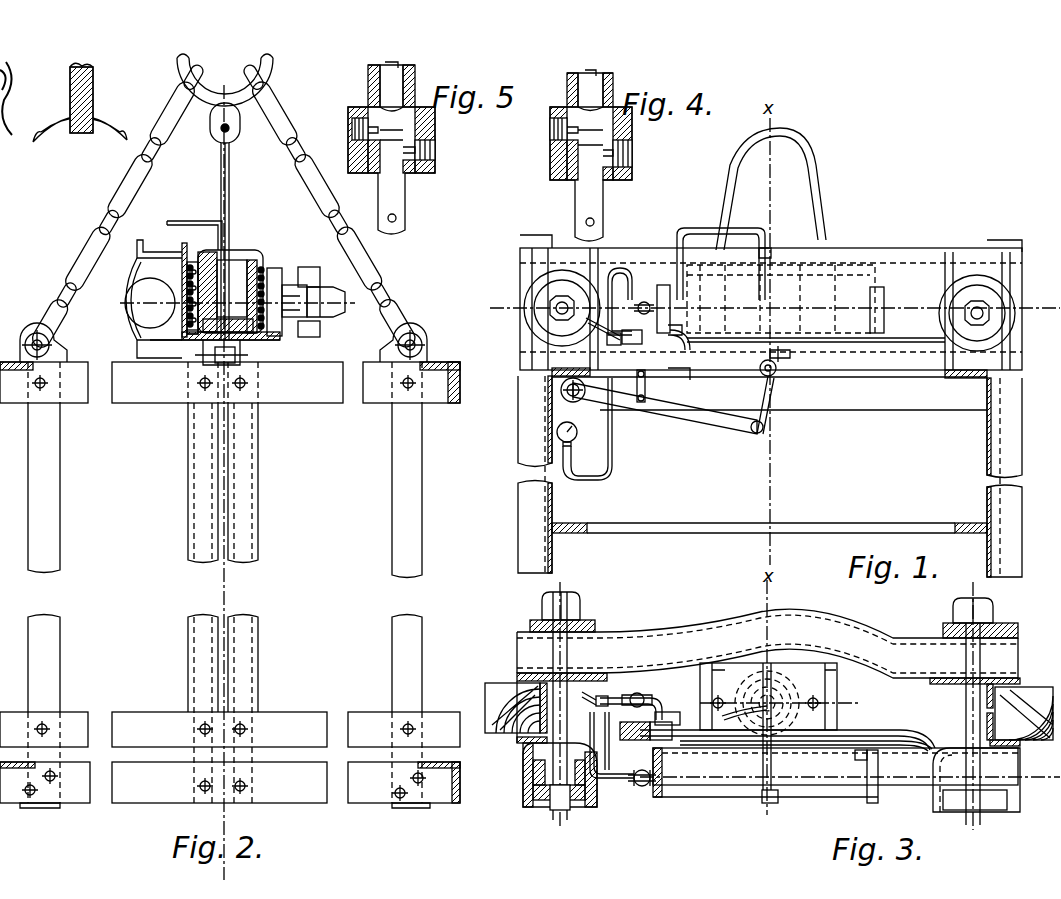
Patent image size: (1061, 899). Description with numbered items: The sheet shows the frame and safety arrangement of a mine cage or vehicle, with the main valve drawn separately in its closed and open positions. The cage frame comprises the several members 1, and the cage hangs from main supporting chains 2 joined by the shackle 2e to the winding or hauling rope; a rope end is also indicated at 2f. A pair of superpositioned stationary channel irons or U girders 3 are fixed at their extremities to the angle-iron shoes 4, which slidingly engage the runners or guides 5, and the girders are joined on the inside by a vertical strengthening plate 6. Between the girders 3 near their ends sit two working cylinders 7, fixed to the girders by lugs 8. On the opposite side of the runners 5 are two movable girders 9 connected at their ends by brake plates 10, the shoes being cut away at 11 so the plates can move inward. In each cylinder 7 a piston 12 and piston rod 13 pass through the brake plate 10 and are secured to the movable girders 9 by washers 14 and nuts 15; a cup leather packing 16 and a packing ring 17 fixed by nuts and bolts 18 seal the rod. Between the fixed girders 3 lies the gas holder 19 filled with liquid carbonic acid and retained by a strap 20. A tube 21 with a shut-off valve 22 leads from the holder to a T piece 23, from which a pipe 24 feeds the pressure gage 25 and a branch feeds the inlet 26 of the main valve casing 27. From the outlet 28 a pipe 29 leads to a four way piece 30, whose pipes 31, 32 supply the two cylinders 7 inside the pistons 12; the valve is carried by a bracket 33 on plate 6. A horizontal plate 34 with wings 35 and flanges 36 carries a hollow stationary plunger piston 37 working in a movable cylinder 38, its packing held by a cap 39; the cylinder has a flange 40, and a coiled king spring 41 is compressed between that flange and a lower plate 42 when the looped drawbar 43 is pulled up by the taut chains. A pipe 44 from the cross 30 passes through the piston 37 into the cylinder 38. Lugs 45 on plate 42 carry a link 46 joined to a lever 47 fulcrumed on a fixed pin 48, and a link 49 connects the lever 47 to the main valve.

In FIG. 2, the frame members 1 is at (32, 412).
In FIG. 1, the frame members 1 is at (985, 392).
In FIG. 2, the main supporting chains 2 is at (112, 208).
In FIG. 2, the shackle 2e is at (274, 70).
In FIG. 2, the rope end 2f is at (100, 84).
In FIG. 2, the horizontal channel irons or U girders 3 is at (178, 254).
In FIG. 1, the horizontal channel irons or U girders 3 is at (912, 262).
In FIG. 3, the horizontal channel irons or U girders 3 is at (835, 775).
In FIG. 1, the angle-iron shoes 4 is at (770, 476).
In FIG. 3, the angle-iron shoes 4 is at (550, 692).
In FIG. 3, the runners or guides 5 is at (485, 707).
In FIG. 2, the vertical strengthening plate 6 is at (186, 268).
In FIG. 3, the vertical strengthening plate 6 is at (914, 742).
In FIG. 1, the working cylinders 7 is at (540, 300).
In FIG. 3, the working cylinders 7 is at (523, 773).
In FIG. 1, the projections or lugs 8 is at (771, 309).
In FIG. 3, the projections or lugs 8 is at (975, 801).
In FIG. 2, the movable superpositioned girders 9 is at (276, 272).
In FIG. 3, the movable superpositioned girders 9 is at (767, 644).
In FIG. 3, the brake plates 10 is at (530, 665).
In FIG. 3, the cut-away portion of shoe 11 is at (517, 677).
In FIG. 2, the pistons 12 is at (215, 330).
In FIG. 3, the pistons 12 is at (548, 800).
In FIG. 2, the piston rods 13 is at (292, 336).
In FIG. 1, the piston rods 13 is at (552, 303).
In FIG. 3, the piston rods 13 is at (568, 648).
In FIG. 2, the washers 14 is at (310, 267).
In FIG. 3, the washers 14 is at (590, 620).
In FIG. 2, the nuts 15 is at (332, 297).
In FIG. 3, the nuts 15 is at (542, 606).
In FIG. 3, the cup leather packing 16 is at (533, 765).
In FIG. 3, the packing ring 17 is at (523, 768).
In FIG. 3, the nuts and bolts 18 is at (570, 752).
In FIG. 2, the gas holder 19 is at (237, 303).
In FIG. 1, the gas holder 19 is at (884, 300).
In FIG. 3, the gas holder 19 is at (735, 755).
In FIG. 2, the strap or plate 20 is at (125, 288).
In FIG. 1, the strap or plate 20 is at (772, 256).
In FIG. 3, the strap or plate 20 is at (766, 805).
In FIG. 1, the tube 21 is at (628, 272).
In FIG. 3, the tube 21 is at (610, 755).
In FIG. 1, the valve 22 is at (644, 299).
In FIG. 3, the valve 22 is at (644, 790).
In FIG. 1, the T piece 23 is at (600, 334).
In FIG. 3, the T piece 23 is at (588, 700).
In FIG. 1, the pipe 24 is at (612, 448).
In FIG. 1, the pressure gage 25 is at (575, 440).
In FIG. 5, the inlet 26 is at (352, 125).
In FIG. 4, the inlet 26 is at (550, 130).
In FIG. 5, the main valve casing 27 is at (368, 80).
In FIG. 4, the main valve casing 27 is at (567, 90).
In FIG. 1, the main valve casing 27 is at (631, 349).
In FIG. 3, the main valve casing 27 is at (640, 696).
In FIG. 5, the outlet 28 is at (435, 150).
In FIG. 4, the outlet 28 is at (632, 154).
In FIG. 1, the pipe 29 is at (682, 345).
In FIG. 3, the pipe 29 is at (660, 698).
In FIG. 1, the cross or four way piece 30 is at (672, 320).
In FIG. 3, the cross or four way piece 30 is at (672, 712).
In FIG. 1, the pipe 31 is at (632, 335).
In FIG. 3, the pipe 31 is at (592, 722).
In FIG. 1, the pipe 32 is at (940, 322).
In FIG. 3, the pipe 32 is at (712, 742).
In FIG. 3, the bracket 33 is at (632, 730).
In FIG. 2, the horizontally disposed plate 34 is at (236, 250).
In FIG. 3, the horizontally disposed plate 34 is at (815, 665).
In FIG. 3, the wings or side plates 35 is at (710, 678).
In FIG. 1, the flanges or projections 36 is at (784, 264).
In FIG. 3, the flanges or projections 36 is at (860, 742).
In FIG. 2, the cylindrical projection 37 is at (252, 258).
In FIG. 2, the movable cylinder 38 is at (207, 252).
In FIG. 1, the movable cylinder 38 is at (685, 380).
In FIG. 2, the nut or cap 39 is at (258, 334).
In FIG. 2, the external annular flange 40 is at (266, 268).
In FIG. 2, the coiled king spring 41 is at (186, 310).
In FIG. 2, the plate 42 is at (186, 333).
In FIG. 1, the plate 42 is at (788, 353).
In FIG. 2, the drawbar 43 is at (232, 140).
In FIG. 1, the drawbar 43 is at (798, 168).
In FIG. 3, the drawbar 43 is at (718, 698).
In FIG. 2, the pipe 44 is at (200, 222).
In FIG. 1, the pipe 44 is at (712, 228).
In FIG. 3, the pipe 44 is at (763, 760).
In FIG. 2, the lugs or projections 45 is at (214, 354).
In FIG. 1, the link 46 is at (783, 390).
In FIG. 1, the lever 47 is at (732, 427).
In FIG. 1, the fixed pin or pivot 48 is at (578, 398).
In FIG. 1, the link 49 is at (646, 380).